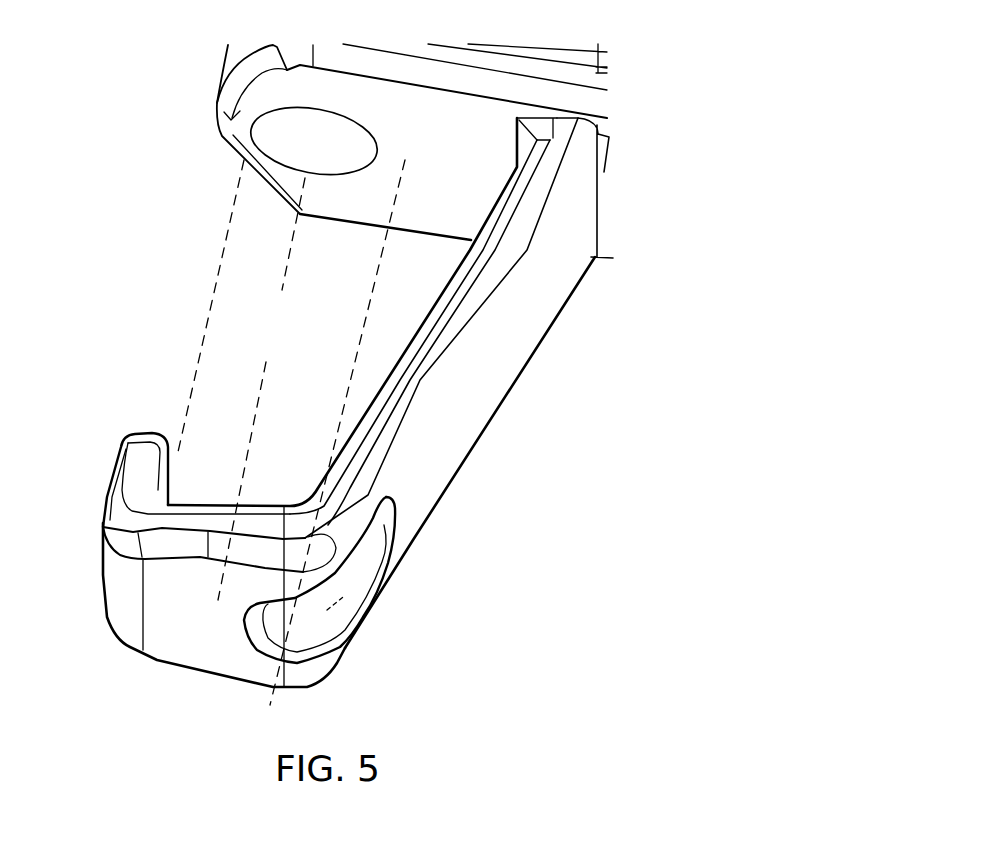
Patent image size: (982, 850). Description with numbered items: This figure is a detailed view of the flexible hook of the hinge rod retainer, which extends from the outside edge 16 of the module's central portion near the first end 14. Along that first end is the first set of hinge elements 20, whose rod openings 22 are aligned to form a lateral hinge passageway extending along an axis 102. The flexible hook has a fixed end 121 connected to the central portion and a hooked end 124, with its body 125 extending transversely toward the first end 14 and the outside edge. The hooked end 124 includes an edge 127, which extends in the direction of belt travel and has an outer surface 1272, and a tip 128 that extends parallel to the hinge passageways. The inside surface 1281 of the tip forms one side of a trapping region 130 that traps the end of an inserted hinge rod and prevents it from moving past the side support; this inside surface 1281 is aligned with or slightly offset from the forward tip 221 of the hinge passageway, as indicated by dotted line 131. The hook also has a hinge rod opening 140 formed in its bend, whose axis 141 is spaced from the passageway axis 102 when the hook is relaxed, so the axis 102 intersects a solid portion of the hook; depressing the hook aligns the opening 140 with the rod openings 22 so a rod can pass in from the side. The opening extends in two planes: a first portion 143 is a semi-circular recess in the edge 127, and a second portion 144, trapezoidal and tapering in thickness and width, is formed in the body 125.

The first end 14 is at (168, 90).
The first set of hinge elements 20 is at (228, 58).
The rod openings 22 is at (312, 153).
The forward tip of the hinge passageway 221 is at (247, 137).
The axis of the retainer opening 141 is at (397, 186).
The axis of the first hinge passageway 102 is at (288, 261).
The trapping region 130 is at (268, 373).
The dotted line 131 is at (213, 285).
The outside edge 16 is at (333, 230).
The fixed end 121 is at (604, 158).
The body 125 is at (381, 383).
The tip 128 is at (117, 458).
The inside surface 1281 is at (167, 480).
The hooked end 124 is at (210, 455).
The edge 127 is at (193, 651).
The outer surface 1272 is at (197, 617).
The hinge rod opening 140 is at (295, 621).
The first portion of the hinge rod opening 143 is at (260, 604).
The second portion of the hinge rod opening 144 is at (393, 517).